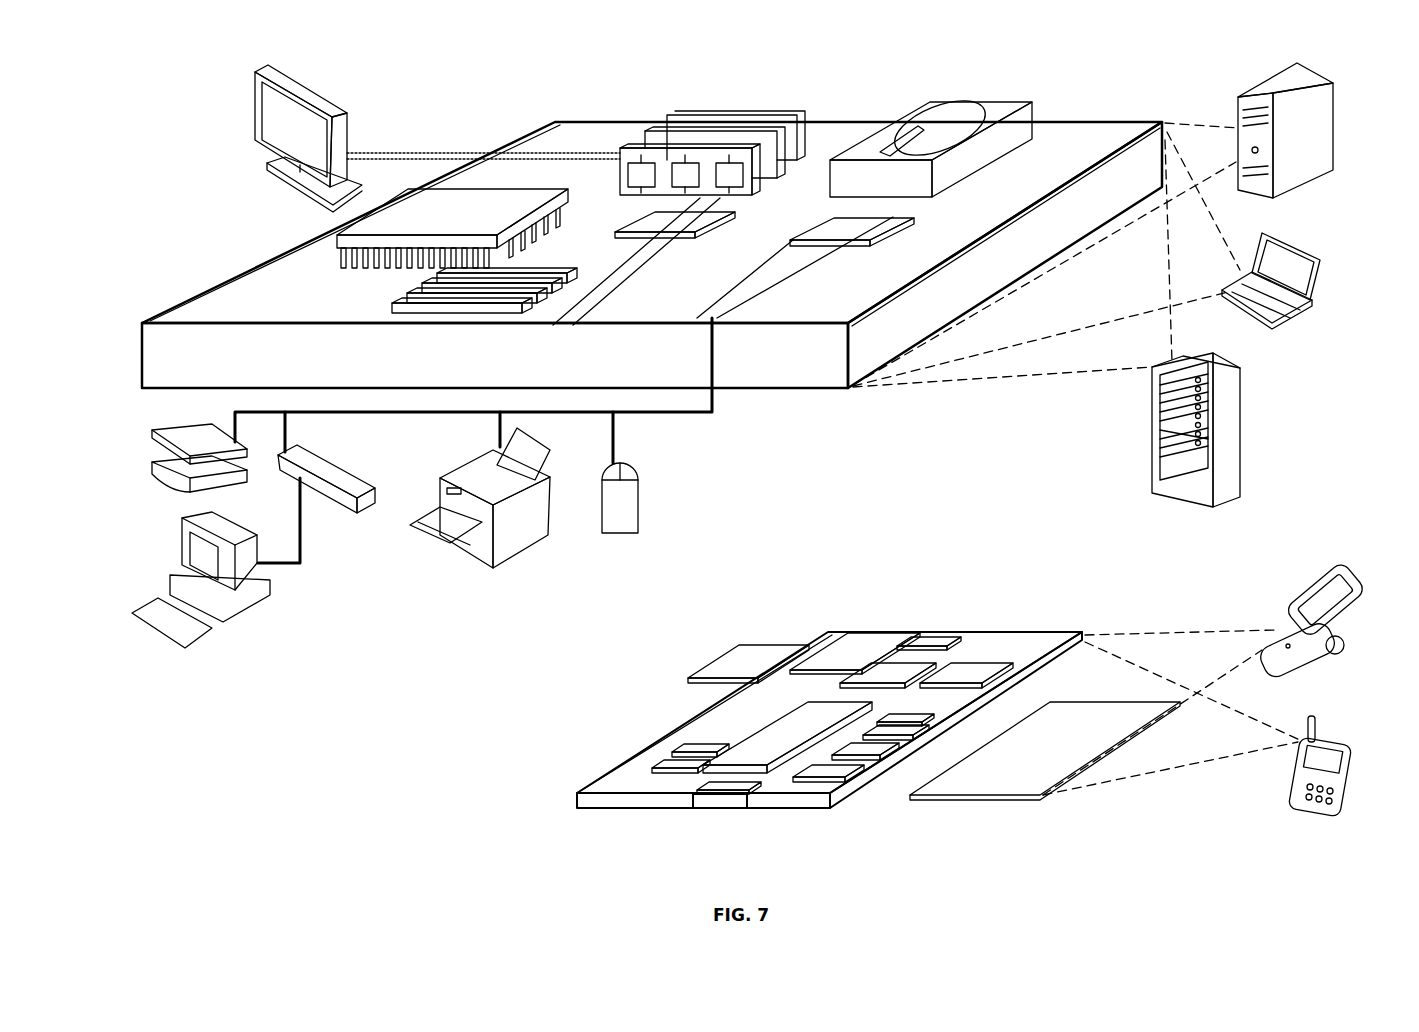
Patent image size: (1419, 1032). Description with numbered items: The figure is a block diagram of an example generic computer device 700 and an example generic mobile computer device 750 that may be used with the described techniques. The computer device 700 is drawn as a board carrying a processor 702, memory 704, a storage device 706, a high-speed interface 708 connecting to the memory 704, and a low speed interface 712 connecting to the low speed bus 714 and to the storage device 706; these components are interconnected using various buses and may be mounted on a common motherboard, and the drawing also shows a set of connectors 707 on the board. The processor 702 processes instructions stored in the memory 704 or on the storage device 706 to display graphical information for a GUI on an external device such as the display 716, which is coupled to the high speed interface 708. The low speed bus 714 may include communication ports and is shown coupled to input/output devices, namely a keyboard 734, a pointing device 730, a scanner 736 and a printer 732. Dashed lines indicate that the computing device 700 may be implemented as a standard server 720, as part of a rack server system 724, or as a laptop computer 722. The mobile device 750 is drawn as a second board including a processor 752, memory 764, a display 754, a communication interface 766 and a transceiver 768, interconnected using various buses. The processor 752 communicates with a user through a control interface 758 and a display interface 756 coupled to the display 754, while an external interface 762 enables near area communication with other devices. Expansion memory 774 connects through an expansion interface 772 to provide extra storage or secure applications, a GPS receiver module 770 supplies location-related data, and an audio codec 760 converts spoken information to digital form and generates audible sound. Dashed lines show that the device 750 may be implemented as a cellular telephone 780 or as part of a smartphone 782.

The generic computer device 700 is at (468, 88).
The processor 702 is at (338, 246).
The memory 704 is at (694, 118).
The storage device 706 is at (922, 118).
The expansion slots 707 is at (395, 300).
The high-speed interface 708 is at (650, 224).
The low speed interface 712 is at (847, 230).
The low speed bus 714 is at (723, 330).
The display 716 is at (256, 73).
The standard server 720 is at (1238, 112).
The laptop computer 722 is at (1272, 240).
The rack server system 724 is at (1152, 458).
The pointing device 730 is at (640, 512).
The printer 732 is at (455, 553).
The keyboard 734 is at (178, 563).
The scanner 736 is at (150, 462).
The generic mobile computer device 750 is at (806, 602).
The processor 752 is at (748, 792).
The display 754 is at (1040, 797).
The display interface 756 is at (838, 795).
The control interface 758 is at (880, 785).
The audio codec 760 is at (893, 760).
The external interface 762 is at (720, 798).
The memory 764 is at (672, 752).
The communication interface 766 is at (882, 668).
The transceiver 768 is at (966, 668).
The GPS receiver module 770 is at (928, 646).
The expansion interface 772 is at (806, 648).
The expansion memory 774 is at (737, 648).
The cellular telephone 780 is at (1332, 578).
The smartphone 782 is at (1310, 718).